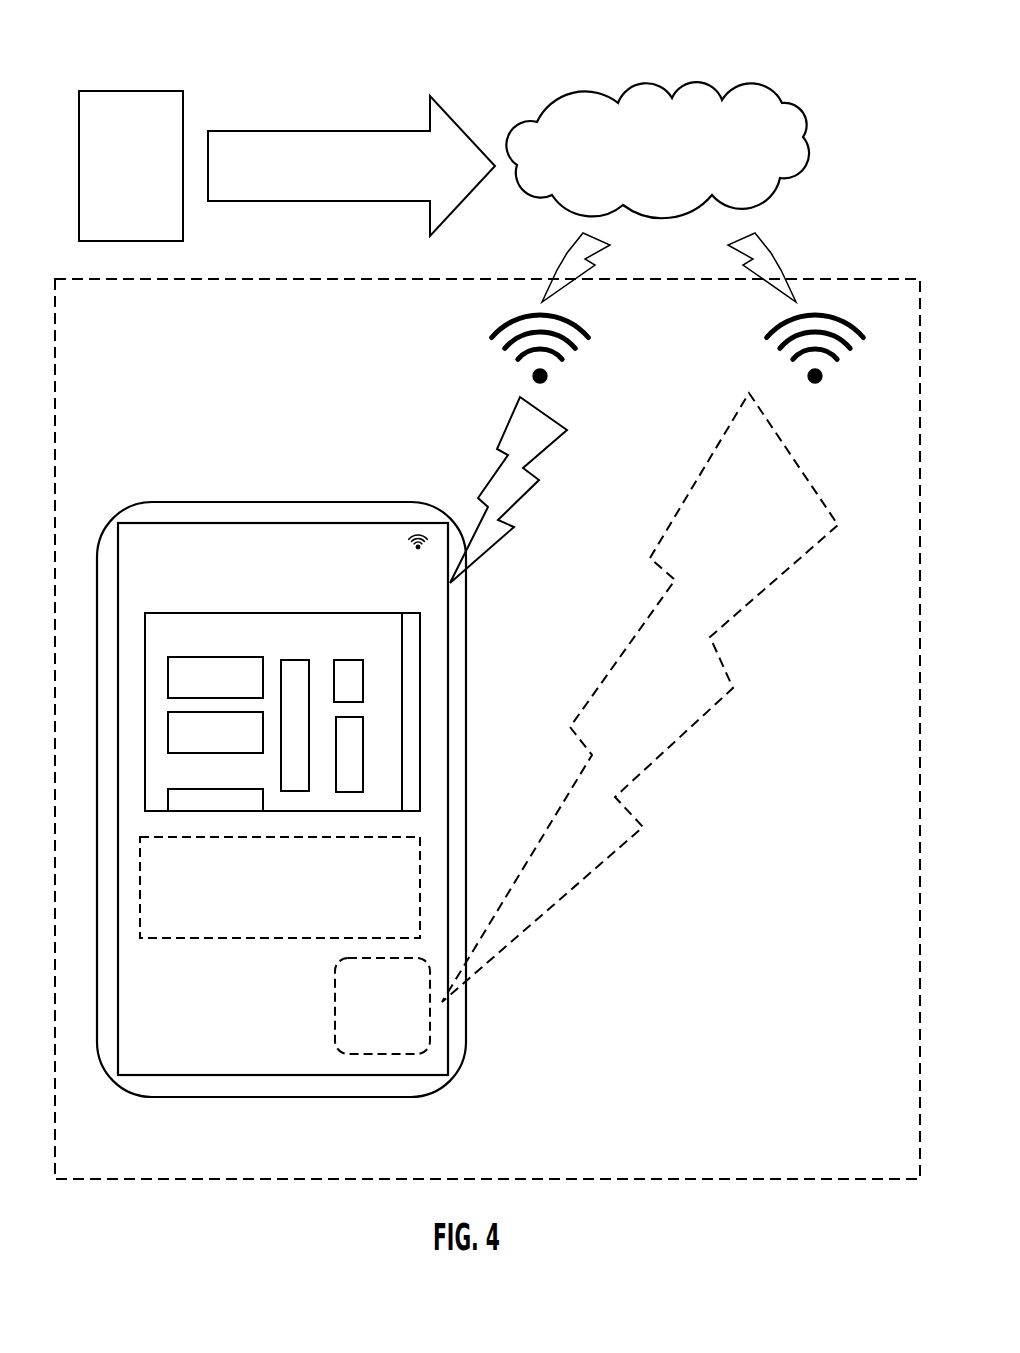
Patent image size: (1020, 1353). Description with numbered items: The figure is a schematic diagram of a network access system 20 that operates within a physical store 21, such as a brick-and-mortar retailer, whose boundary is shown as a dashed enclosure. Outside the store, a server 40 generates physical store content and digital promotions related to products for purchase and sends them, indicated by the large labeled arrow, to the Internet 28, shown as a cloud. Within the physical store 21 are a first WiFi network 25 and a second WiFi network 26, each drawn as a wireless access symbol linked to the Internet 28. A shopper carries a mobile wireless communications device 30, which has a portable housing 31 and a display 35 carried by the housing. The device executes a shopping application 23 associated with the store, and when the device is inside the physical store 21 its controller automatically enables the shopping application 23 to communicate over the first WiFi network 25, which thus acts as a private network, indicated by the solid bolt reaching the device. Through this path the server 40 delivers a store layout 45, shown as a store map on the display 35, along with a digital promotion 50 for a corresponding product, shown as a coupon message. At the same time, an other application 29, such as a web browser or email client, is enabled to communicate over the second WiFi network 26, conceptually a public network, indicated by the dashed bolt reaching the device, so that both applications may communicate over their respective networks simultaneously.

The server 40 is at (104, 86).
The network access system 20 is at (325, 74).
The Internet 28 is at (790, 102).
The first WiFi network 25 is at (520, 330).
The second WiFi network 26 is at (825, 325).
The physical store 21 is at (778, 1179).
The mobile wireless communications device 30 is at (293, 774).
The portable housing 31 is at (257, 503).
The display 35 is at (343, 550).
The shopping application 23 is at (352, 602).
The store layout 45 is at (145, 640).
The digital promotion 50 is at (187, 938).
The other application 29 is at (430, 1040).